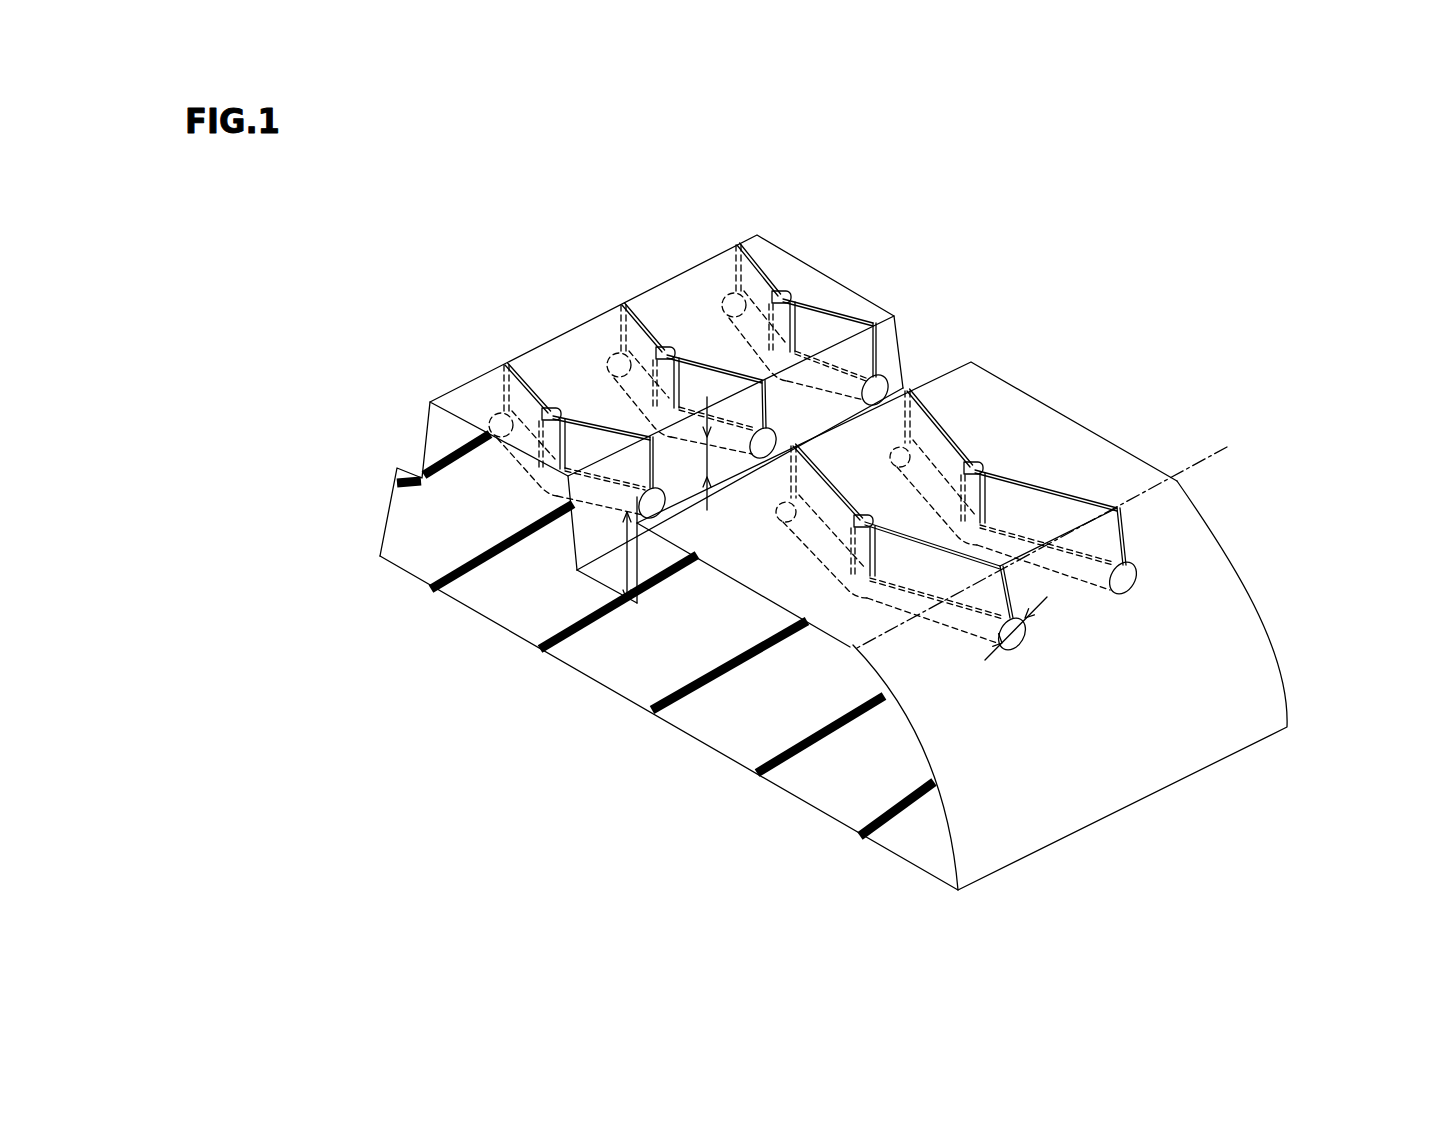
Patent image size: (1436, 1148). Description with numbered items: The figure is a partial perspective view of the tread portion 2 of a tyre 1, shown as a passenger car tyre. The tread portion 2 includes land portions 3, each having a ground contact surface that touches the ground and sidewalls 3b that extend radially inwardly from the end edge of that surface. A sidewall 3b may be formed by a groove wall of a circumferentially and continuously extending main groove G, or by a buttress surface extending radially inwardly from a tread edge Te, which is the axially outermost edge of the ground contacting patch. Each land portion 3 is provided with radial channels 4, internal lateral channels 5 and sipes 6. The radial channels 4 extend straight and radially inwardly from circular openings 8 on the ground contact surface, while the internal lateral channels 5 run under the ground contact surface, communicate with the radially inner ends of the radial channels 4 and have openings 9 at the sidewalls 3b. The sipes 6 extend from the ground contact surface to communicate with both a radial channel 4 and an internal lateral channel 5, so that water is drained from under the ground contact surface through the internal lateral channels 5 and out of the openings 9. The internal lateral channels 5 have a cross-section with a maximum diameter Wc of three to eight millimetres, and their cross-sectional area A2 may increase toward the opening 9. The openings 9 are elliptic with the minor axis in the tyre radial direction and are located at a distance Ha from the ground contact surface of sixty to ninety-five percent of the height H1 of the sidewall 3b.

The tyre 1 is at (1230, 270).
The tread portion 2 is at (1140, 305).
The land portion 3 is at (702, 290).
The sidewall 3b is at (657, 283).
The radial channel 4 is at (777, 293).
The internal lateral channel 5 is at (878, 348).
The sipe 6 is at (827, 315).
The opening 8 is at (975, 462).
The opening 9 is at (658, 505).
The main groove G is at (913, 352).
The tread edge Te is at (1083, 541).
The maximum diameter Wc is at (1017, 643).
The cross-sectional area A2 is at (763, 450).
The distance Ha is at (705, 433).
The height H1 is at (627, 513).